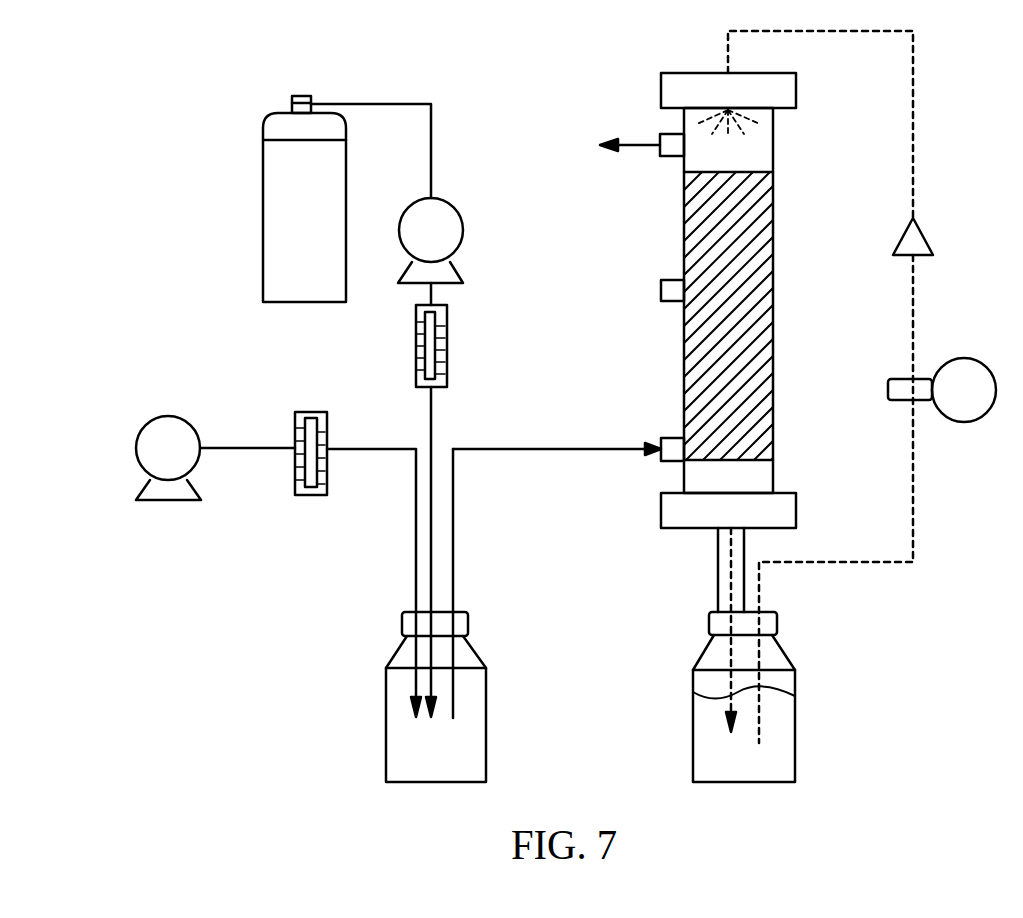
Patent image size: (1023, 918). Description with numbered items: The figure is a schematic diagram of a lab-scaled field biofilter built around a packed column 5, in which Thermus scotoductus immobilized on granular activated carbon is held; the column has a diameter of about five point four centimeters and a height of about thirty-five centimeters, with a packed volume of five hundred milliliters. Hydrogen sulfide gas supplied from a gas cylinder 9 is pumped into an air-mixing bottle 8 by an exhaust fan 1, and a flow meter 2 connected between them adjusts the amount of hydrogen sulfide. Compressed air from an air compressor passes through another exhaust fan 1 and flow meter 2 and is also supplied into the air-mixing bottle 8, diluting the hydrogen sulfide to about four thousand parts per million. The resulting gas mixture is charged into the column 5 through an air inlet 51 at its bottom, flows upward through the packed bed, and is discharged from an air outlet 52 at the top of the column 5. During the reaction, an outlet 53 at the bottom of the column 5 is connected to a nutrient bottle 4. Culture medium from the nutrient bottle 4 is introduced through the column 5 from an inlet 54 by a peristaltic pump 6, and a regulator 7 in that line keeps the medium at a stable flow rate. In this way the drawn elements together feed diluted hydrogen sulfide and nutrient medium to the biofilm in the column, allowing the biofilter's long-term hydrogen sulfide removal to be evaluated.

The exhaust fan 1 is at (463, 231).
The flow meter 2 is at (447, 347).
The nutrient bottle 4 is at (795, 728).
The column 5 is at (768, 304).
The peristaltic pump 6 is at (963, 358).
The regulator 7 is at (925, 236).
The air-mixing bottle 8 is at (386, 726).
The gas cylinder 9 is at (263, 218).
The air inlet 51 is at (662, 440).
The air outlet 52 is at (661, 136).
The outlet 53 is at (718, 576).
The inlet 54 is at (661, 87).